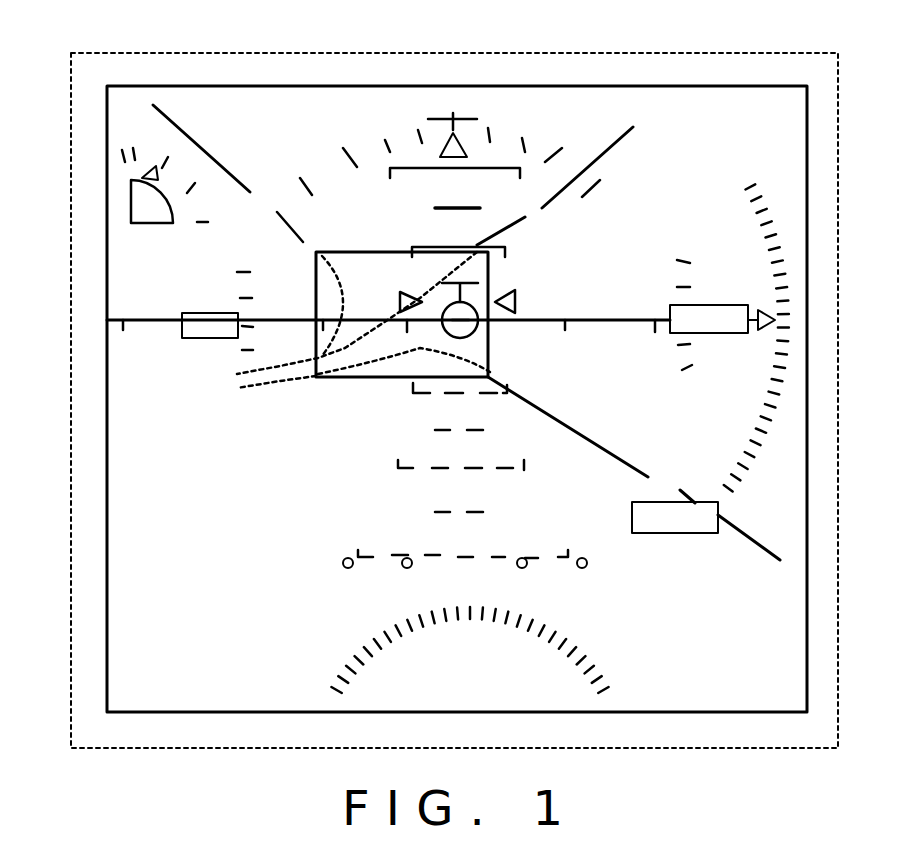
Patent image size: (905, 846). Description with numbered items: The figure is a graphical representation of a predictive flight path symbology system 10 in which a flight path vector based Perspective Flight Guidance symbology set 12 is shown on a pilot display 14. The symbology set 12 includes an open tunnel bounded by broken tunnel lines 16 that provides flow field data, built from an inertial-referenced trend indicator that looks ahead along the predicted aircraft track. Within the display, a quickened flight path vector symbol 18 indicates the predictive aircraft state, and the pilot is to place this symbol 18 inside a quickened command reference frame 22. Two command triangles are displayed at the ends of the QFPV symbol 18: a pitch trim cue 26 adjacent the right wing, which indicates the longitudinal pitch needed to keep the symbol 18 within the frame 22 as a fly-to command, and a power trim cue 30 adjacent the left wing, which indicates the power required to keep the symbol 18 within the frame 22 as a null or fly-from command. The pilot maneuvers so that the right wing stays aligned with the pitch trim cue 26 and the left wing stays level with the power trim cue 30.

The predictive flight path symbology system 10 is at (175, 770).
The Perspective Flight Guidance symbology set 12 is at (70, 325).
The pilot display 14 is at (107, 506).
The broken tunnel lines 16 is at (223, 167).
The quickened flight path vector symbol 18 is at (471, 332).
The quickened command reference frame 22 is at (362, 378).
The pitch trim cue 26 is at (512, 290).
The power trim cue 30 is at (415, 291).